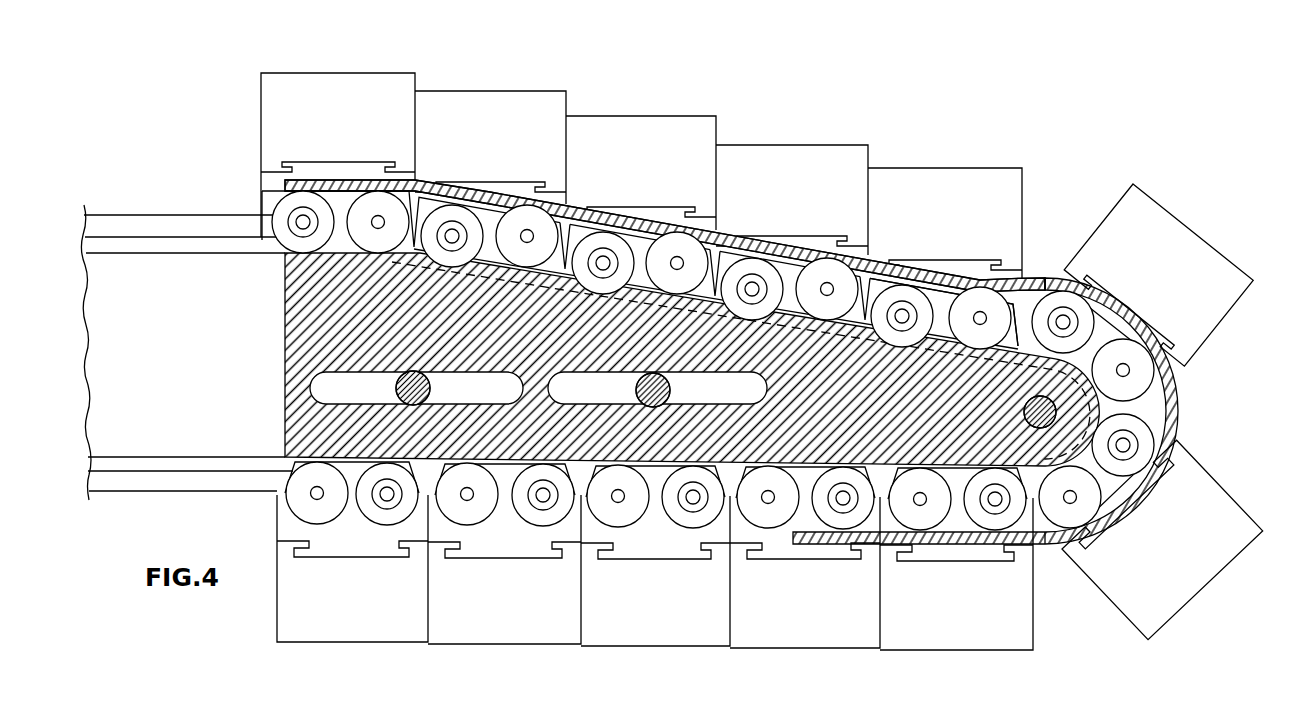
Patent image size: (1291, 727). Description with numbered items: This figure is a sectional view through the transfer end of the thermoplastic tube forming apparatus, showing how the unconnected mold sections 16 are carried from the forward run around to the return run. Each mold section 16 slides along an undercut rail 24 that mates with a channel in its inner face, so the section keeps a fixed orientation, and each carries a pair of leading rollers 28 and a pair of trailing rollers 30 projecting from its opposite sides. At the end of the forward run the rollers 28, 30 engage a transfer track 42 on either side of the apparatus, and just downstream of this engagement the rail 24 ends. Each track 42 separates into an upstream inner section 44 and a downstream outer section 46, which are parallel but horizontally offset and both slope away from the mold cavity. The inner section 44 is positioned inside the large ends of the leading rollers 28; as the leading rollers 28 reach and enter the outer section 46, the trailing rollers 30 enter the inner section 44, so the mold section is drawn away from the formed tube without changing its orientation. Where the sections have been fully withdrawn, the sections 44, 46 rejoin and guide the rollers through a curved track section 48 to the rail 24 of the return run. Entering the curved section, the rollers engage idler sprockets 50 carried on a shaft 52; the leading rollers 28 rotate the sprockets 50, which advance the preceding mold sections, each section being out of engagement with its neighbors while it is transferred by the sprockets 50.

The mold section 16 is at (343, 88).
The undercut rail 24 is at (157, 225).
The leading rollers 28 is at (448, 191).
The trailing rollers 30 is at (285, 222).
The transfer track 42 is at (345, 196).
The upstream inner section 44 is at (620, 302).
The downstream outer section 46 is at (588, 222).
The curved track section 48 is at (1178, 420).
The idler sprocket 50 is at (1021, 310).
The shaft 52 is at (1060, 400).